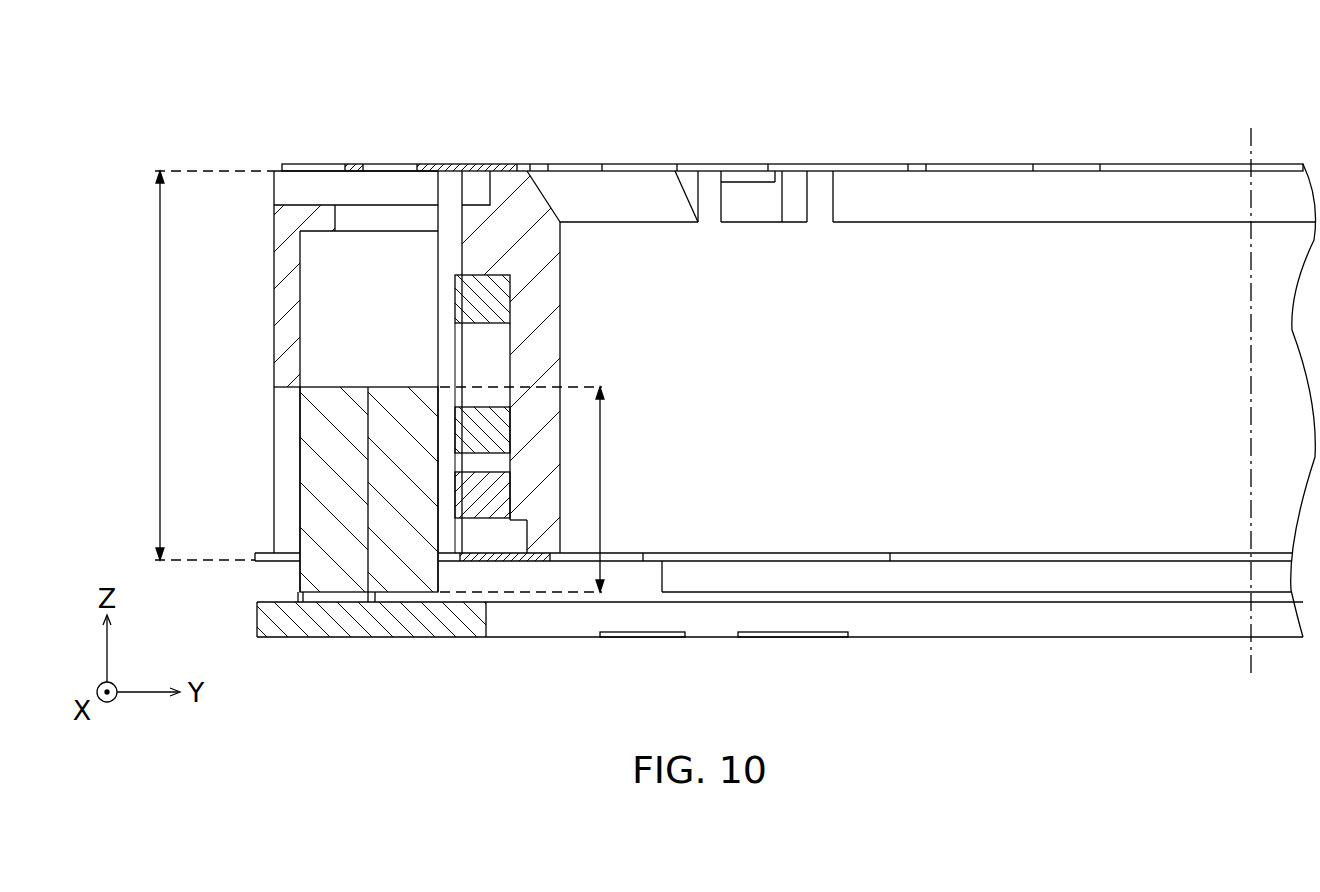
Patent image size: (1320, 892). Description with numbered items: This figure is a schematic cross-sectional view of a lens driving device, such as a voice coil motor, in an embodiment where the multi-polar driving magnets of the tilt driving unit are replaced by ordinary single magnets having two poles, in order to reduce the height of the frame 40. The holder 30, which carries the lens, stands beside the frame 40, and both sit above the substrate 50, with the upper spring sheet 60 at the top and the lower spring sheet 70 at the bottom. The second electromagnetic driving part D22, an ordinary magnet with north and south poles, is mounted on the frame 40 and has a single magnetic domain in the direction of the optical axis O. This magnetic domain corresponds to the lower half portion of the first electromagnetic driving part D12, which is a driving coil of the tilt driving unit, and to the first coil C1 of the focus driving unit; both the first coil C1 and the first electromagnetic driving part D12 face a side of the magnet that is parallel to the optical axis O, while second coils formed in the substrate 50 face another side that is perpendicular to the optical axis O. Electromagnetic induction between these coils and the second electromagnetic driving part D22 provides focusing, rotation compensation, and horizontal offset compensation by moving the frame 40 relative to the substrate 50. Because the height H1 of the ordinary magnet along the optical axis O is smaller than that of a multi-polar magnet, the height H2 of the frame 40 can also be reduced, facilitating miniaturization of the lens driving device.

The holder 30 is at (507, 220).
The frame 40 is at (298, 212).
The substrate 50 is at (255, 620).
The upper spring sheet 60 is at (352, 162).
The lower spring sheet 70 is at (540, 564).
The first coil C1 is at (477, 505).
The first electromagnetic driving part D12 is at (480, 298).
The second electromagnetic driving part D22 is at (298, 490).
The height of the second electromagnetic driving parts H1 is at (541, 489).
The height of the frame H2 is at (195, 365).
The optical axis O is at (1251, 386).